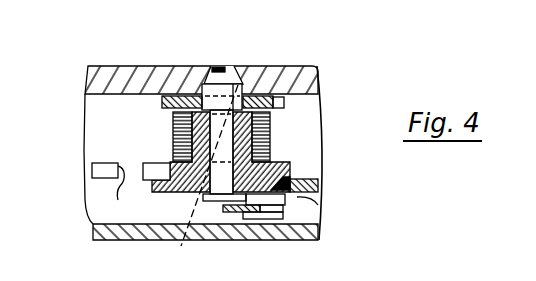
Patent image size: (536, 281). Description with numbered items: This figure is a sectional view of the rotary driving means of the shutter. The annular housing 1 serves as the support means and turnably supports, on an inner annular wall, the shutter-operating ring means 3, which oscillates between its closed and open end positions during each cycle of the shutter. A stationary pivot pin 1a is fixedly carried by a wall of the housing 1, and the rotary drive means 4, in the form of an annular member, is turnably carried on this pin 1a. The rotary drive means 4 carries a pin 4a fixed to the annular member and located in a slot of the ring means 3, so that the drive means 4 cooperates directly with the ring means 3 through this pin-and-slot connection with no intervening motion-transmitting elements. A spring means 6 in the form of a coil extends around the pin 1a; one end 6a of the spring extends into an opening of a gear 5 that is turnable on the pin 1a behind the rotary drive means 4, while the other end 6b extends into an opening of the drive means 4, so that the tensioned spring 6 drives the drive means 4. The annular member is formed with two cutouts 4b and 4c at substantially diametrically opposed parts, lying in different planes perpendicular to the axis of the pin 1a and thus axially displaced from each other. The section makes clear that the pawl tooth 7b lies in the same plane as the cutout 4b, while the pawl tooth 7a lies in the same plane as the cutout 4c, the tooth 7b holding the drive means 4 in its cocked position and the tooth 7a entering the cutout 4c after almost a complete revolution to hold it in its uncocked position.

The annular housing 1 is at (102, 128).
The stationary pivot pin 1a is at (284, 137).
The shutter-operating ring means 3 is at (233, 212).
The rotary drive means 4 is at (178, 194).
The pin 4a is at (267, 219).
The cutout 4b is at (290, 170).
The cutout 4c is at (146, 167).
The gear 5 is at (284, 102).
The spring means 6 is at (176, 142).
The spring end 6a is at (241, 66).
The spring end 6b is at (205, 177).
The pawl tooth 7a is at (109, 192).
The pawl tooth 7b is at (318, 205).